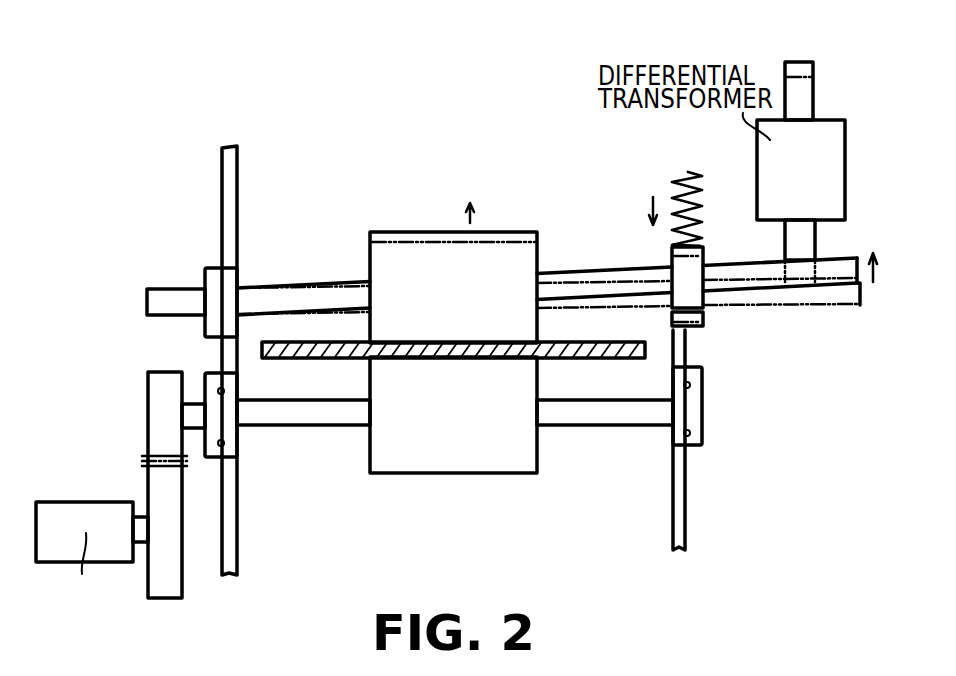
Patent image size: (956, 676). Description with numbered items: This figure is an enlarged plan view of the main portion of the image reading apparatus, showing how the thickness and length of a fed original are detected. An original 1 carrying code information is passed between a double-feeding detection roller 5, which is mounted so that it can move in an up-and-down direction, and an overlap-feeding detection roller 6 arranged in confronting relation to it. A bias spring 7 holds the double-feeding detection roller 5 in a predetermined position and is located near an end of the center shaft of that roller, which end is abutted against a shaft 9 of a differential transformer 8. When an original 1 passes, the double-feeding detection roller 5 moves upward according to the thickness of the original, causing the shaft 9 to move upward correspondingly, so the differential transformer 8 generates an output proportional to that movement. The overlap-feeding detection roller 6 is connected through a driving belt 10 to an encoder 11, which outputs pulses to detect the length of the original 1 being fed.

The original 1 is at (610, 360).
The double-feeding detection roller 5 is at (400, 252).
The overlap-feeding detection roller 6 is at (411, 458).
The bias spring 7 is at (690, 174).
The differential transformer 8 is at (833, 190).
The shaft 9 is at (807, 98).
The driving belt 10 is at (163, 403).
The encoder 11 is at (108, 502).